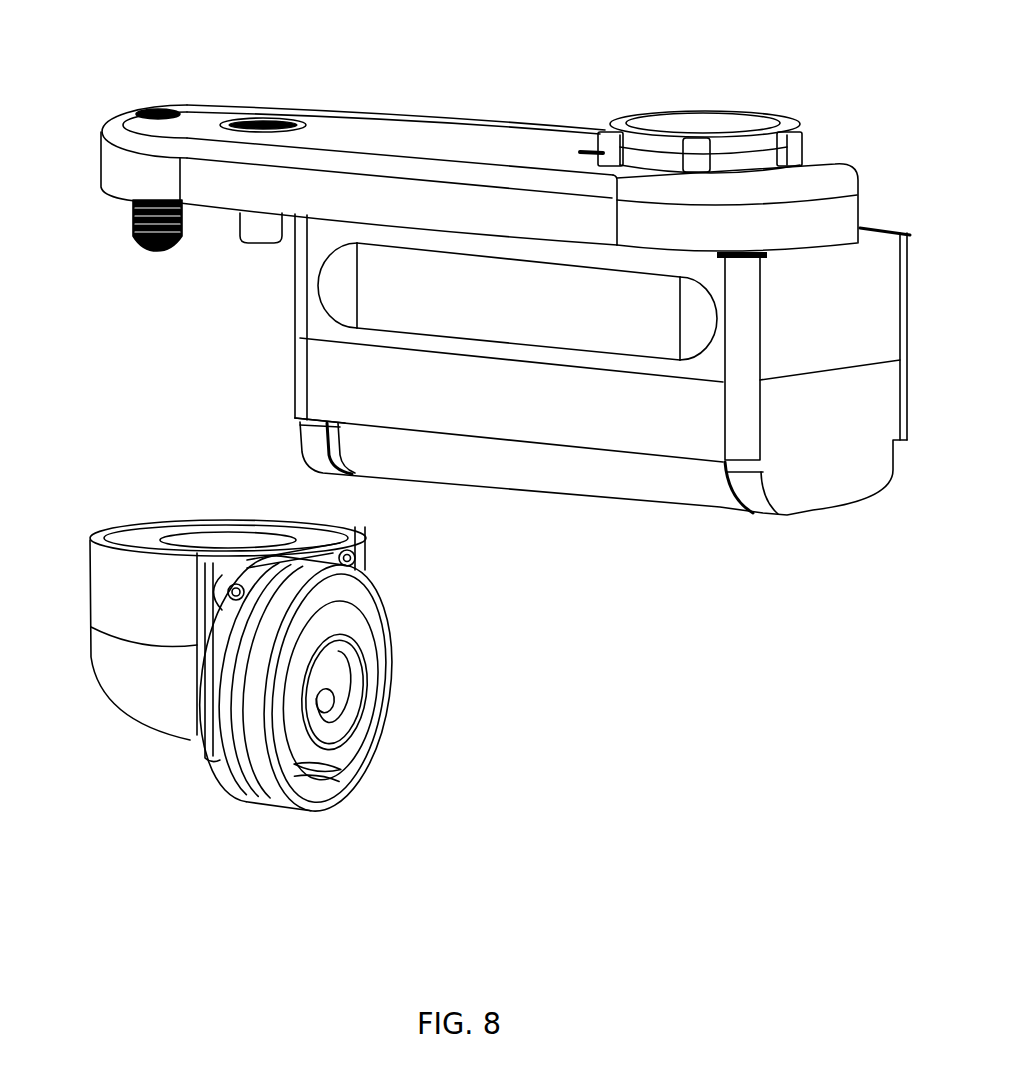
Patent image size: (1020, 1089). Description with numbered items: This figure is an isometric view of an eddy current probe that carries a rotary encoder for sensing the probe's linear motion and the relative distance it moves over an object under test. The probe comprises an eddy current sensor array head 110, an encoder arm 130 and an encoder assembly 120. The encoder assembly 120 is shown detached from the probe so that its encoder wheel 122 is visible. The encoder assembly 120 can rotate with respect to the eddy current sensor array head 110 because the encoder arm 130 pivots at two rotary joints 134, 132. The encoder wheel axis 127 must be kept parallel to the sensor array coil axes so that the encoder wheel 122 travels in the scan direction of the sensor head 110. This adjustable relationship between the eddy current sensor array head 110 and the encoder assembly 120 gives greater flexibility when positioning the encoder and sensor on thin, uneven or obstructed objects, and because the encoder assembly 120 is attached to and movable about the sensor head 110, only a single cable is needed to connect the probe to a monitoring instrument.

The eddy current sensor array head 110 is at (813, 512).
The encoder assembly 120 is at (173, 517).
The encoder wheel 122 is at (393, 640).
The encoder wheel axis 127 is at (327, 682).
The encoder arm 130 is at (405, 117).
The rotary joint 132 is at (712, 117).
The rotary joint 134 is at (263, 117).